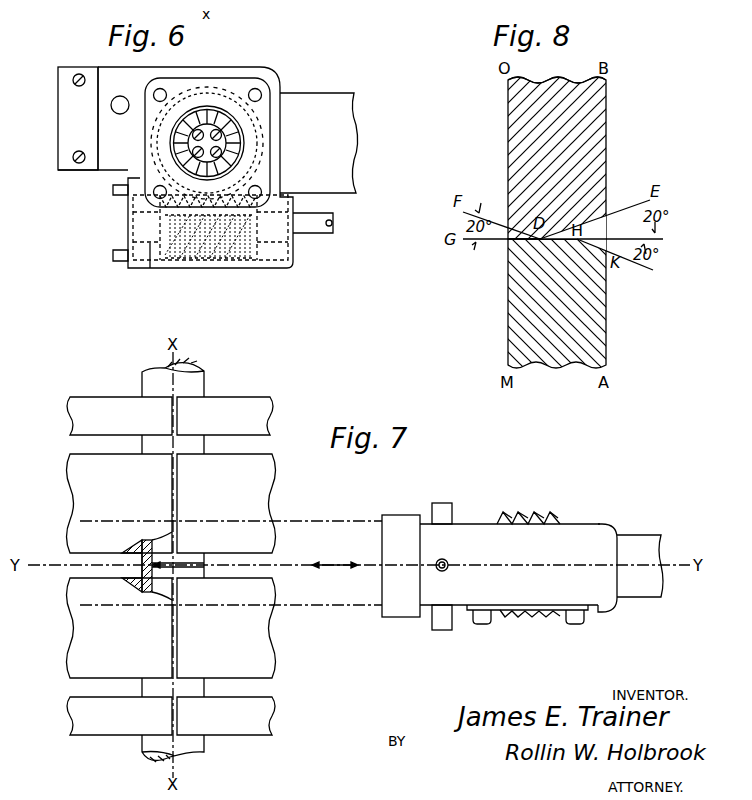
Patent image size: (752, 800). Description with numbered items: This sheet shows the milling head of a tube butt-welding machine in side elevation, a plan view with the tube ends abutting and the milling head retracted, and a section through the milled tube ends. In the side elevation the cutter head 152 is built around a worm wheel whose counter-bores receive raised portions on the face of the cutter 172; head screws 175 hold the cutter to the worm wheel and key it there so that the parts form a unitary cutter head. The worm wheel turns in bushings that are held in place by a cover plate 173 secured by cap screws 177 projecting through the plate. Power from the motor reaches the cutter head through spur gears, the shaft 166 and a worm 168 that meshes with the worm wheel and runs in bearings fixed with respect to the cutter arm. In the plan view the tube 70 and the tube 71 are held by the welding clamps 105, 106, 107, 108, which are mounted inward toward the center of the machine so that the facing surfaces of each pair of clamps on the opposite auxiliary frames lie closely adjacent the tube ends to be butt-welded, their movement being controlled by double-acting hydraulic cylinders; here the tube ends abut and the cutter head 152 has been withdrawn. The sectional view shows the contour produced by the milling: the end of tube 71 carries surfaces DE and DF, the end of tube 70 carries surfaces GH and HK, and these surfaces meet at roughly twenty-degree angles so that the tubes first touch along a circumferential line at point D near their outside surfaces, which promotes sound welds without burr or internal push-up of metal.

In FIG. 8, the tube 70 is at (553, 372).
In FIG. 7, the tube 70 is at (205, 379).
In FIG. 8, the tube 71 is at (560, 64).
In FIG. 7, the tube 71 is at (205, 749).
In FIG. 7, the welding clamp 105 is at (120, 503).
In FIG. 7, the welding clamp 106 is at (226, 503).
In FIG. 7, the welding clamp 107 is at (120, 628).
In FIG. 7, the welding clamp 108 is at (226, 628).
In FIG. 7, the cutter head 152 is at (468, 538).
In FIG. 6, the shaft 166 is at (317, 234).
In FIG. 6, the worm 168 is at (195, 253).
In FIG. 6, the cutter 172 is at (228, 155).
In FIG. 6, the cover plate 173 is at (148, 125).
In FIG. 6, the head screw 175 is at (224, 137).
In FIG. 6, the cap screw 177 is at (260, 90).